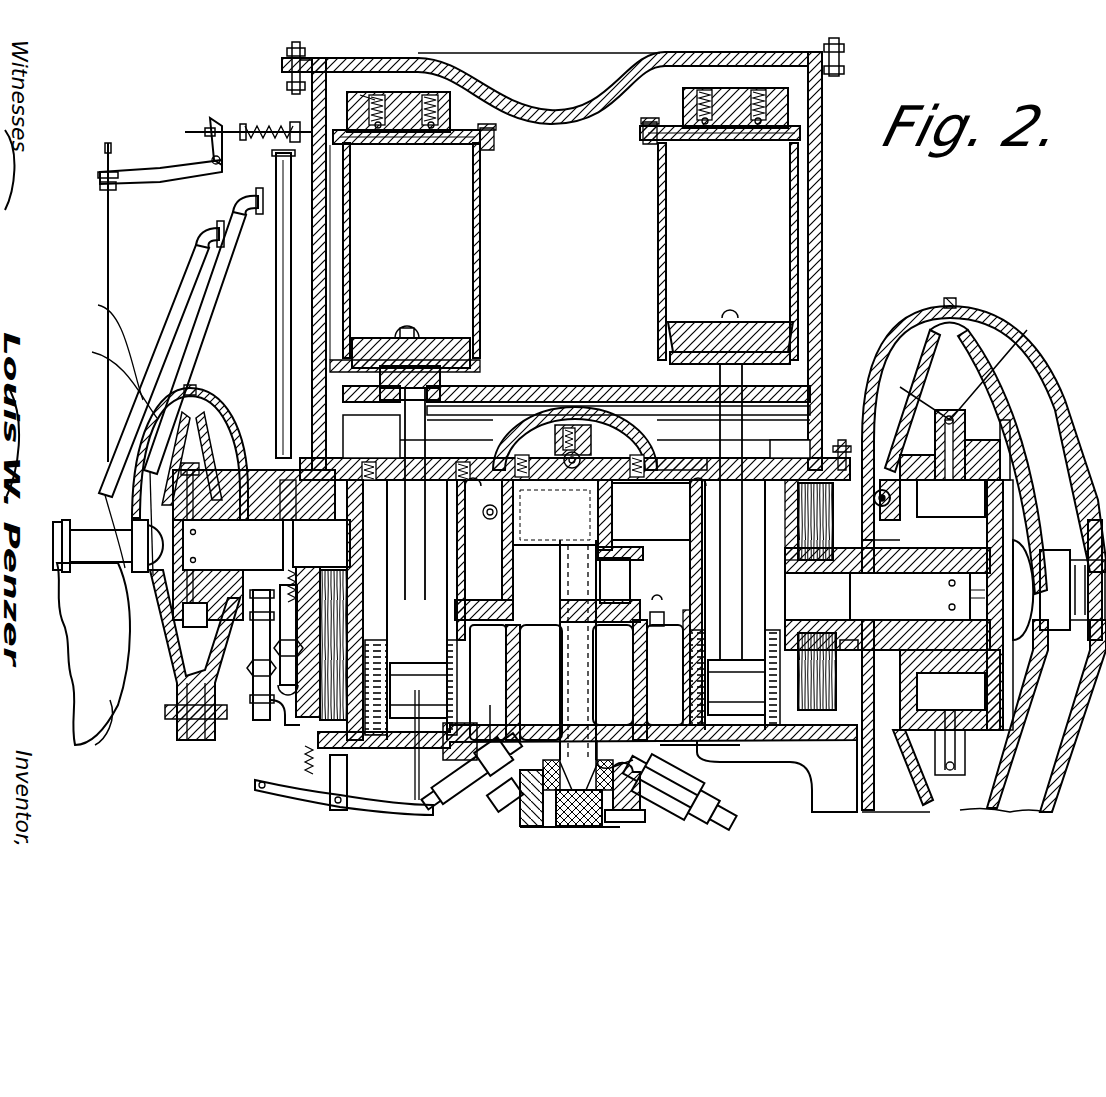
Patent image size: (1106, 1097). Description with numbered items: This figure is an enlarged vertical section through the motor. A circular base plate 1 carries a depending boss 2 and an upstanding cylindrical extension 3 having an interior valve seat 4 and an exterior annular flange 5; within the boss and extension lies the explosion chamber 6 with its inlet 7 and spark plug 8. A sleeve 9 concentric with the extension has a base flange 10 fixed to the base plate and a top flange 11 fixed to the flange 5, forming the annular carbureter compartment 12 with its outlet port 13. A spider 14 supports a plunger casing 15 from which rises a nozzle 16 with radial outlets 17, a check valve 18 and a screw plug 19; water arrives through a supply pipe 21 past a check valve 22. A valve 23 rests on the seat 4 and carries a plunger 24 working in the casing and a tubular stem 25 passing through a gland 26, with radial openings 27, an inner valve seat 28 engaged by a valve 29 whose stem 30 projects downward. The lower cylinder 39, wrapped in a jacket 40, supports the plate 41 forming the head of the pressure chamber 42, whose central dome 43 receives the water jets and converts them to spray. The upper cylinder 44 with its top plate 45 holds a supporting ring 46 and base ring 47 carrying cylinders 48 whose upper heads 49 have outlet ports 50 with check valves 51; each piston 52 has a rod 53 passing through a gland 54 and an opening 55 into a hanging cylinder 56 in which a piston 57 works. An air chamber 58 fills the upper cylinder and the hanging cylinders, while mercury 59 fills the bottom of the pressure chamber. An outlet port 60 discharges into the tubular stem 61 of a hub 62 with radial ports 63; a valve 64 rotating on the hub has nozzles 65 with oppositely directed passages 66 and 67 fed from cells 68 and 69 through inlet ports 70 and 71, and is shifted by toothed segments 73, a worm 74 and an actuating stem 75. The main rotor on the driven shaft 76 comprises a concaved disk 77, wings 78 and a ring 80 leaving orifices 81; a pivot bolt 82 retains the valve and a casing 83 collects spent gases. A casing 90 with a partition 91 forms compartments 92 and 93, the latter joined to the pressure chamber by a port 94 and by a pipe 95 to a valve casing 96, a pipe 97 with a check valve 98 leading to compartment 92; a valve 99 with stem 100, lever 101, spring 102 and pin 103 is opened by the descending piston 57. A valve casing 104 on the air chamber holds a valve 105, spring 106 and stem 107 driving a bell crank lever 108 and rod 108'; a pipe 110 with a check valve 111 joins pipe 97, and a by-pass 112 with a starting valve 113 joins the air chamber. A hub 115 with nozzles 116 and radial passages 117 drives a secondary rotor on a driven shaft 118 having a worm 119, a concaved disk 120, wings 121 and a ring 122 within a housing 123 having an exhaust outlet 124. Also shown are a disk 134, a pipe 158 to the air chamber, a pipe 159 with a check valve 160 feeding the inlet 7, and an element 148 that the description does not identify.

The base plate 1 is at (805, 742).
The depending boss 2 is at (505, 803).
The cylindrical extension 3 is at (500, 665).
The valve seat 4 is at (620, 680).
The annular flange 5 is at (668, 660).
The explosion chamber 6 is at (537, 693).
The inlet 7 is at (581, 665).
The spark plug 8 is at (722, 800).
The sleeve 9 is at (462, 612).
The base flange 10 is at (660, 780).
The top flange 11 is at (660, 605).
The annular compartment 12 is at (664, 678).
The outlet port 13 is at (492, 709).
The spider 14 is at (640, 545).
The plunger casing 15 is at (555, 512).
The nozzle 16 is at (600, 405).
The radial outlets 17 is at (726, 435).
The check valve 18 is at (644, 514).
The screw plug 19 is at (565, 405).
The water supply pipe 21 is at (488, 540).
The check valve 22 is at (520, 470).
The valve 23 is at (541, 682).
The plunger 24 is at (614, 580).
The tubular stem 25 is at (610, 690).
The gland 26 is at (568, 789).
The radial openings 27 is at (538, 669).
The valve seat 28 is at (567, 800).
The valve 29 is at (620, 773).
The stem 30 is at (625, 816).
The lower cylinder 39 is at (826, 445).
The jacket 40 is at (790, 442).
The plate 41 is at (575, 447).
The pressure chamber 42 is at (682, 602).
The central dome 43 is at (545, 395).
The upper cylinder 44 is at (822, 225).
The top plate 45 is at (690, 60).
The supporting ring 46 is at (682, 453).
The base ring 47 is at (495, 388).
The cylinders 48 is at (482, 300).
The upper head 49 is at (745, 100).
The outlet ports 50 is at (468, 110).
The check valve 51 is at (382, 146).
The piston 52 is at (440, 338).
The rod 53 is at (388, 348).
The gland 54 is at (470, 358).
The opening 55 is at (604, 443).
The cylinder 56 is at (579, 502).
The piston 57 is at (572, 610).
The air chamber 58 is at (569, 250).
The mercury 59 is at (792, 652).
The outlet port 60 is at (887, 599).
The tubular stem 61 is at (910, 596).
The hub 62 is at (1010, 520).
The radial ports 63 is at (950, 595).
The valve 64 is at (975, 445).
The nozzles 65 is at (965, 760).
The outlet passage 66 is at (969, 368).
The outlet passage 67 is at (905, 752).
The cell 68 is at (942, 486).
The cell 69 is at (957, 728).
The inlet port 70 is at (965, 400).
The inlet port 71 is at (950, 690).
The toothed segment 73 is at (824, 595).
The worm 74 is at (895, 478).
The actuating stem 75 is at (880, 480).
The driven shaft 76 is at (1059, 590).
The concaved disk 77 is at (1010, 455).
The wings 78 is at (946, 365).
The ring 80 is at (915, 355).
The orifices 81 is at (950, 330).
The pivot bolt 82 is at (1085, 560).
The casing 83 is at (878, 345).
The casing 90 is at (272, 500).
The partition 91 is at (321, 543).
The compartment 92 is at (228, 573).
The compartment 93 is at (334, 630).
The port 94 is at (380, 459).
The pipe 95 is at (292, 625).
The valve casing 96 is at (275, 676).
The pipe 97 is at (208, 742).
The check valve 98 is at (226, 650).
The valve 99 is at (345, 740).
The stem 100 is at (352, 780).
The lever 101 is at (318, 792).
The spring 102 is at (300, 770).
The pin 103 is at (439, 745).
The valve casing 104 is at (245, 125).
The valve 105 is at (353, 89).
The spring 106 is at (288, 128).
The stem 107 is at (200, 122).
The bell crank lever 108 is at (161, 181).
The rod 108' is at (80, 302).
The pipe 110 is at (278, 232).
The check valve 111 is at (262, 720).
The by-pass 112 is at (276, 315).
The starting valve 113 is at (322, 292).
The hub 115 is at (150, 505).
The nozzles 116 is at (100, 347).
The radial passage 117 is at (208, 475).
The driven shaft 118 is at (88, 540).
The worm 119 is at (118, 578).
The concaved disk 120 is at (118, 640).
The wings 121 is at (205, 422).
The ring 122 is at (212, 440).
The housing 123 is at (107, 378).
The outlet 124 is at (178, 760).
The disk 134 is at (118, 723).
The valve 148 is at (549, 716).
The pipe 158 is at (200, 300).
The pipe 159 is at (471, 779).
The check valve 160 is at (200, 335).